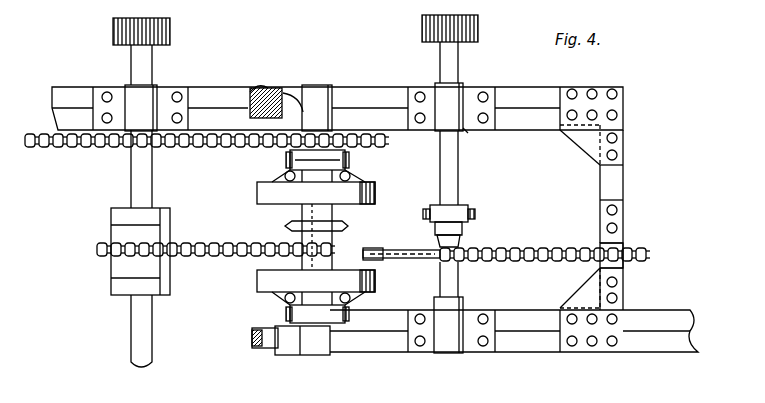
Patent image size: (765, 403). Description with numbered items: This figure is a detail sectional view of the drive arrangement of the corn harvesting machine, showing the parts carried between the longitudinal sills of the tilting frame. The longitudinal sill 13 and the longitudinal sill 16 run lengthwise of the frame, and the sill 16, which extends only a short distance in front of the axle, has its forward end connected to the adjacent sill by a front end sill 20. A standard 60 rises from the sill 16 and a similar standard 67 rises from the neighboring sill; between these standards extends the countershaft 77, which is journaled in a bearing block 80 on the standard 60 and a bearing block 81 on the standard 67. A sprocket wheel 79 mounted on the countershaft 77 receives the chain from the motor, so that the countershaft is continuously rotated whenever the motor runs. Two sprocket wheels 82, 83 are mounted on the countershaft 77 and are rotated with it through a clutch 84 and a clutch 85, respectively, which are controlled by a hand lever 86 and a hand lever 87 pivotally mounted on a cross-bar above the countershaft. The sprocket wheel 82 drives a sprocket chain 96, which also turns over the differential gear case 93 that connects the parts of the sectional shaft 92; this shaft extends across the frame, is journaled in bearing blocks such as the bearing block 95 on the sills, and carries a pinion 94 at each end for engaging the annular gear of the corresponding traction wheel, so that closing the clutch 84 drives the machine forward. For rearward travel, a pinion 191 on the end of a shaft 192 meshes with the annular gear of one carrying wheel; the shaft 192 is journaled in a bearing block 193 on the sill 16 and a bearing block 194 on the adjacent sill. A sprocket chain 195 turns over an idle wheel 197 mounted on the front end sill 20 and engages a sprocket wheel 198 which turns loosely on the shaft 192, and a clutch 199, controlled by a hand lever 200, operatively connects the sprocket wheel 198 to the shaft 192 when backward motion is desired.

The longitudinal sill 13 is at (694, 310).
The longitudinal sill 16 is at (537, 86).
The front end sill 20 is at (624, 185).
The standard 60 is at (256, 86).
The standard 67 is at (260, 340).
The countershaft 77 is at (372, 242).
The sprocket wheel 79 is at (362, 133).
The bearing block 80 is at (322, 85).
The bearing block 81 is at (330, 350).
The sprocket wheel 82 is at (286, 229).
The sprocket wheel 83 is at (297, 237).
The clutch 84 is at (258, 292).
The clutch 85 is at (258, 202).
The hand lever 86 is at (285, 310).
The hand lever 87 is at (298, 166).
The sectional shaft 92 is at (136, 368).
The differential gear case 93 is at (111, 270).
The pinion 94 is at (159, 113).
The bearing block 95 is at (157, 86).
The sprocket chain 96 is at (210, 257).
The pinion 191 is at (478, 38).
The shaft 192 is at (460, 68).
The bearing block 193 is at (466, 131).
The bearing block 194 is at (463, 312).
The sprocket chain 195 is at (555, 238).
The idle wheel 197 is at (628, 246).
The sprocket wheel 198 is at (401, 242).
The clutch 199 is at (462, 240).
The hand lever 200 is at (470, 212).